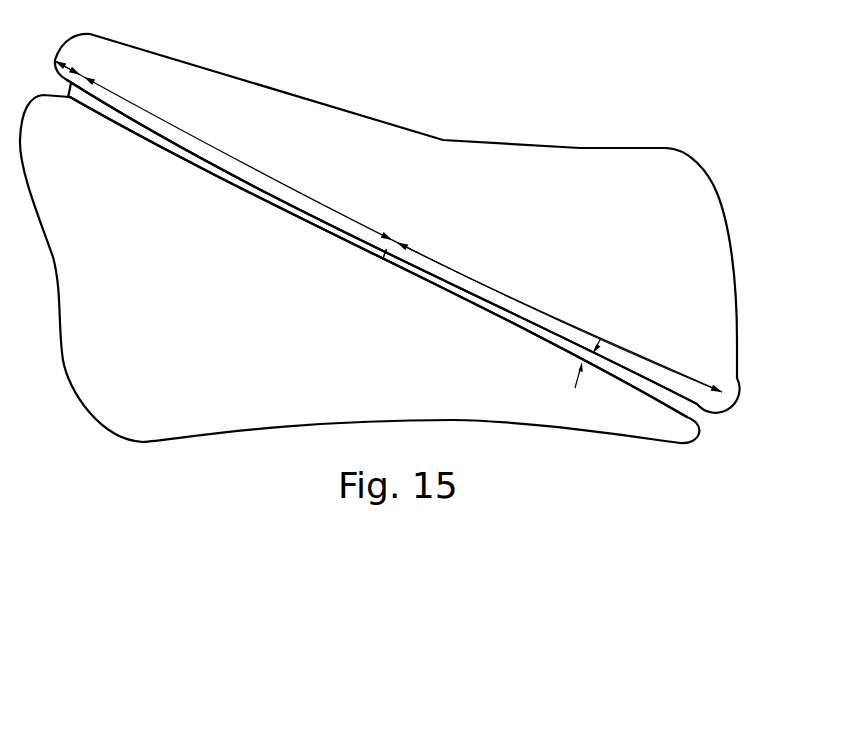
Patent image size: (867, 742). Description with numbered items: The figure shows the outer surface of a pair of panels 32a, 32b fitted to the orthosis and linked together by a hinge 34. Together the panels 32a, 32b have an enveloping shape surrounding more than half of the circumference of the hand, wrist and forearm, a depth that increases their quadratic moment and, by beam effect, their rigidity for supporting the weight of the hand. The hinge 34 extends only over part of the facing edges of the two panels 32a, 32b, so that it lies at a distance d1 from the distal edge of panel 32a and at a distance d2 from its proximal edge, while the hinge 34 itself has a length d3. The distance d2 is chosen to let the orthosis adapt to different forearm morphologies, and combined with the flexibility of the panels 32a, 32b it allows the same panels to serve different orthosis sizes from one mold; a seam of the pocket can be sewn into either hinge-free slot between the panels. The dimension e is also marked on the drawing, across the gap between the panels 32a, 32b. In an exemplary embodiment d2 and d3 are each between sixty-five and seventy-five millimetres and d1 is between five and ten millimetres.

The panel 32a is at (665, 167).
The panel 32b is at (632, 423).
The hinge 34 is at (260, 197).
The distance between the hinge and the distal edge of the panel d1 is at (80, 59).
The distance between the hinge and the proximal edge of the panel d2 is at (559, 317).
The length of the hinge d3 is at (388, 226).
The slot width dimension e is at (580, 364).